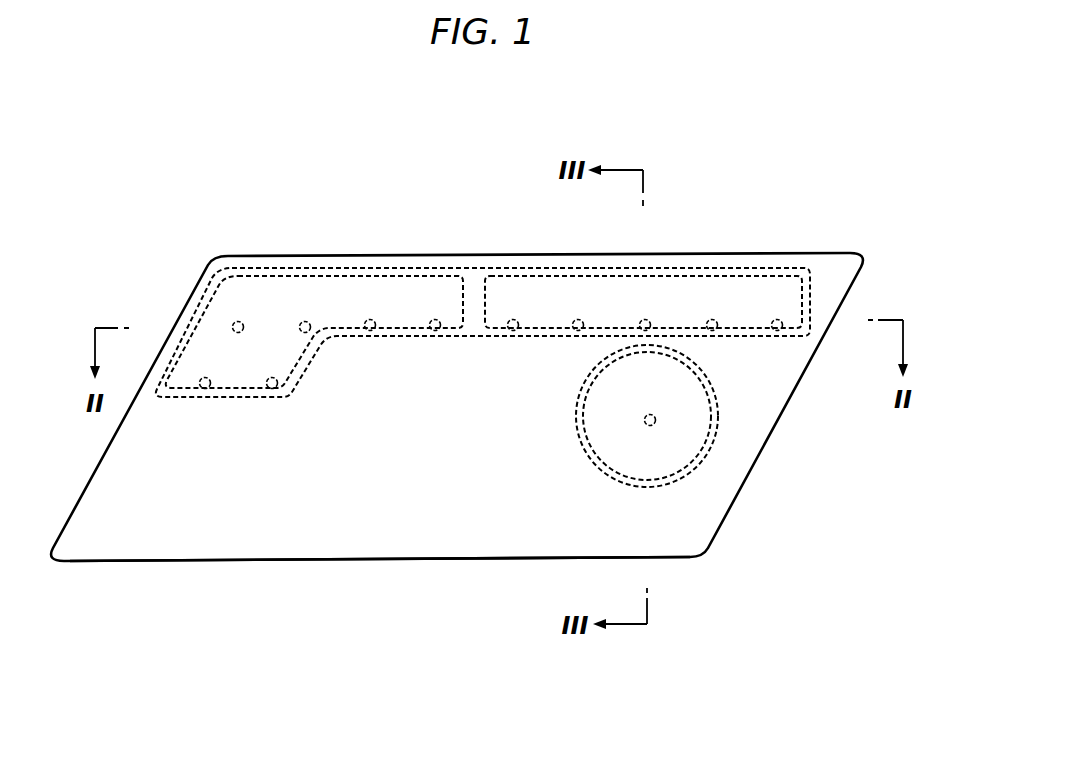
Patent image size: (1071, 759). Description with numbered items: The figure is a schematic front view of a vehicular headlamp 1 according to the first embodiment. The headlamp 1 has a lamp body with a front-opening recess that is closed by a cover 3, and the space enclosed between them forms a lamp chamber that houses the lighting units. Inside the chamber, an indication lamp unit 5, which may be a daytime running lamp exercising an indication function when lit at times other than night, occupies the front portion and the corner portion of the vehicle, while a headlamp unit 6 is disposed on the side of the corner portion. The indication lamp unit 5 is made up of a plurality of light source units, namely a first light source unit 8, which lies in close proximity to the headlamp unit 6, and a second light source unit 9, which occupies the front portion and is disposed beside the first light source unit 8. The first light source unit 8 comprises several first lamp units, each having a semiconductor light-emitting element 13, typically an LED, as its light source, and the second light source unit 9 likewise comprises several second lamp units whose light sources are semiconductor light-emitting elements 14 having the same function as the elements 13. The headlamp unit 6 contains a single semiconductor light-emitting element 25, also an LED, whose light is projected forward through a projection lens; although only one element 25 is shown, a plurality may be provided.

The vehicular headlamp 1 is at (876, 186).
The cover 3 is at (265, 562).
The indication lamp unit 5 is at (720, 262).
The headlamp unit 6 is at (716, 370).
The first light source unit 8 is at (762, 276).
The second light source unit 9 is at (420, 276).
The semiconductor light-emitting element 13 is at (513, 320).
The semiconductor light-emitting element 14 is at (236, 322).
The semiconductor light-emitting element 25 is at (653, 424).